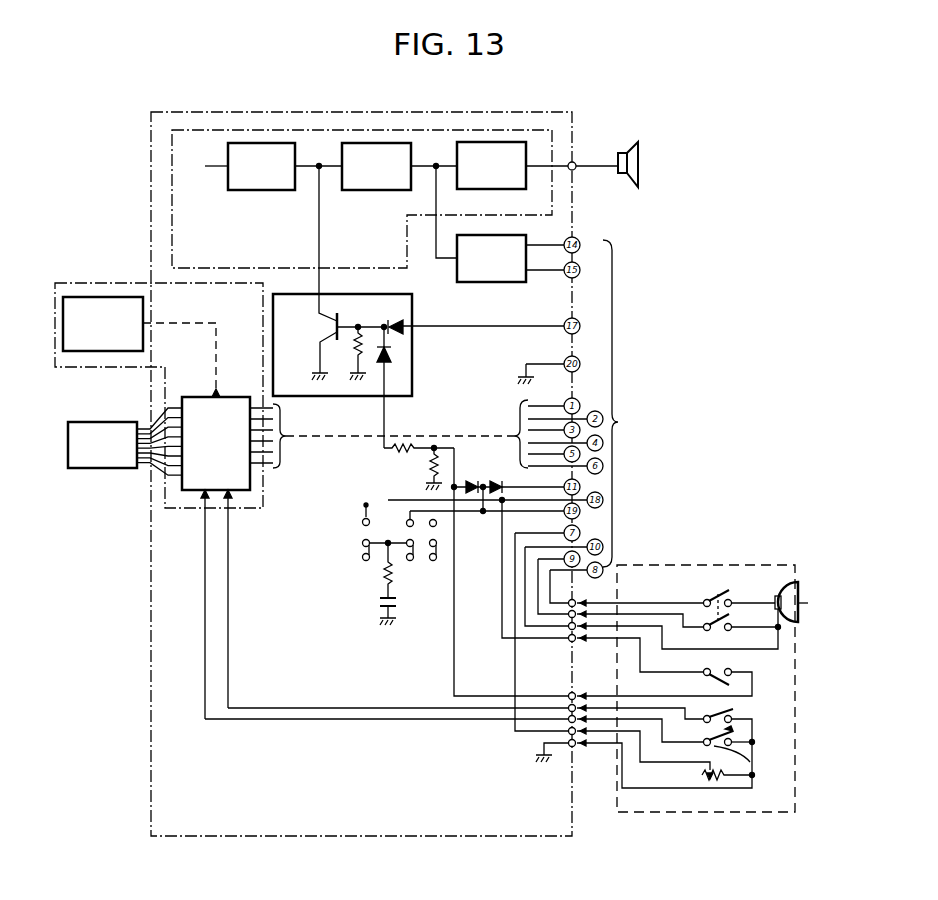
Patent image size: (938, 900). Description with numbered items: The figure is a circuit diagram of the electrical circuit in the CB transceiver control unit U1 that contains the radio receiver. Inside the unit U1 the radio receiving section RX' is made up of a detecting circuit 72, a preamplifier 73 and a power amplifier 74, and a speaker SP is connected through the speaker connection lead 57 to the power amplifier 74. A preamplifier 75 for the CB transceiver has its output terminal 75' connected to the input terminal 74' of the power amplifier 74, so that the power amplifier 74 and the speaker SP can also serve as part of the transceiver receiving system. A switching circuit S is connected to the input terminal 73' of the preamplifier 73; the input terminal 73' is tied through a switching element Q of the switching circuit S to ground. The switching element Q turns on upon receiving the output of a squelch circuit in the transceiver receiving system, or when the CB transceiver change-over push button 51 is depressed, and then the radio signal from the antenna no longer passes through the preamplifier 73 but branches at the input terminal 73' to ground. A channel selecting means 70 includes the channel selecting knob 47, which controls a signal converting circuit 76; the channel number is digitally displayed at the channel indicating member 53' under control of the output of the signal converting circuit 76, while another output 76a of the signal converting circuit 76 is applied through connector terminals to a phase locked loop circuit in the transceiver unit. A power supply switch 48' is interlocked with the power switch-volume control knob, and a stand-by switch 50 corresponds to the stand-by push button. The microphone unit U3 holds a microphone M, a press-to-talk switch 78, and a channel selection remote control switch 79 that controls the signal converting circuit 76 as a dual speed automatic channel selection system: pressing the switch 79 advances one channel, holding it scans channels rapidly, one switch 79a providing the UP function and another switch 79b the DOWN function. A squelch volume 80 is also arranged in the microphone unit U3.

The unit U1 is at (150, 139).
The radio receiving section RX' is at (324, 199).
The detecting circuit 72 is at (251, 143).
The preamplifier 73 is at (376, 137).
The input terminal 73' is at (318, 189).
The power amplifier 74 is at (491, 137).
The input terminal 74' is at (435, 127).
The speaker connection lead 57 is at (605, 165).
The speaker SP is at (638, 160).
The preamplifier 75 is at (552, 401).
The output terminal 75' is at (437, 235).
The switching circuit S is at (342, 371).
The switching element Q is at (330, 320).
The channel selecting knob 47 is at (80, 297).
The channel selecting means 70 is at (130, 283).
The channel indicating member 53' is at (125, 462).
The signal converting circuit 76 is at (200, 397).
The output 76a is at (382, 441).
The power supply switch 48' is at (359, 583).
The stand-by switch 50 is at (416, 562).
The microphone unit U3 is at (664, 566).
The press-to-talk switch 78 is at (715, 590).
The microphone M is at (802, 602).
The CB transceiver change-over push button 51 is at (733, 667).
The switch 79a is at (732, 714).
The channel selection remote control switch 79 is at (752, 742).
The switch 79b is at (752, 775).
The squelch volume 80 is at (715, 783).